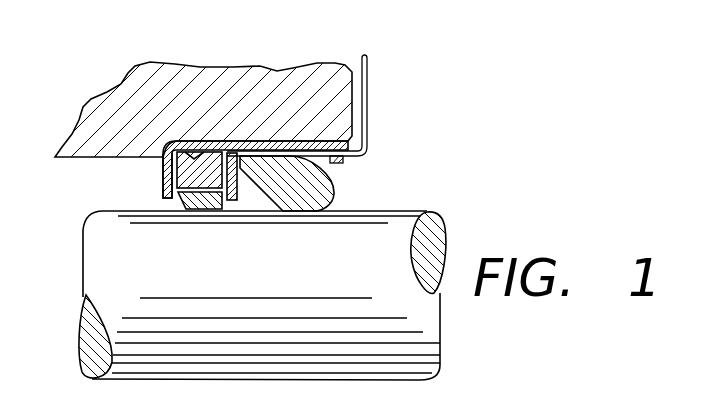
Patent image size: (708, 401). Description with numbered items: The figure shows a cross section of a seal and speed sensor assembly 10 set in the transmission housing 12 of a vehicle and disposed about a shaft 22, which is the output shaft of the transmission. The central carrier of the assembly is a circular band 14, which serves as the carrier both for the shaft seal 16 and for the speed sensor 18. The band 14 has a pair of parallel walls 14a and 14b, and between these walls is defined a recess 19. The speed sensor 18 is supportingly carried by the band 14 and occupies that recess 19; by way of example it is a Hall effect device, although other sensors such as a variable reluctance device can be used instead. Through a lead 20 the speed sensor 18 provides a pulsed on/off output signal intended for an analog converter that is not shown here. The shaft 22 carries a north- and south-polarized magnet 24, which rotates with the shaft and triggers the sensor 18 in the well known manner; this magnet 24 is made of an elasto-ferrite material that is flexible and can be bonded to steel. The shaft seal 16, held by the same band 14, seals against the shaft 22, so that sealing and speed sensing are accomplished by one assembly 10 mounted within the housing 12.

The seal and speed sensor assembly 10 is at (458, 158).
The transmission housing 12 is at (225, 72).
The circular band 14 is at (322, 160).
The wall 14a is at (165, 190).
The wall 14b is at (237, 160).
The shaft seal 16 is at (311, 208).
The speed sensor 18 is at (175, 168).
The recess 19 is at (190, 152).
The lead 20 is at (368, 90).
The shaft 22 is at (113, 249).
The magnet 24 is at (198, 206).